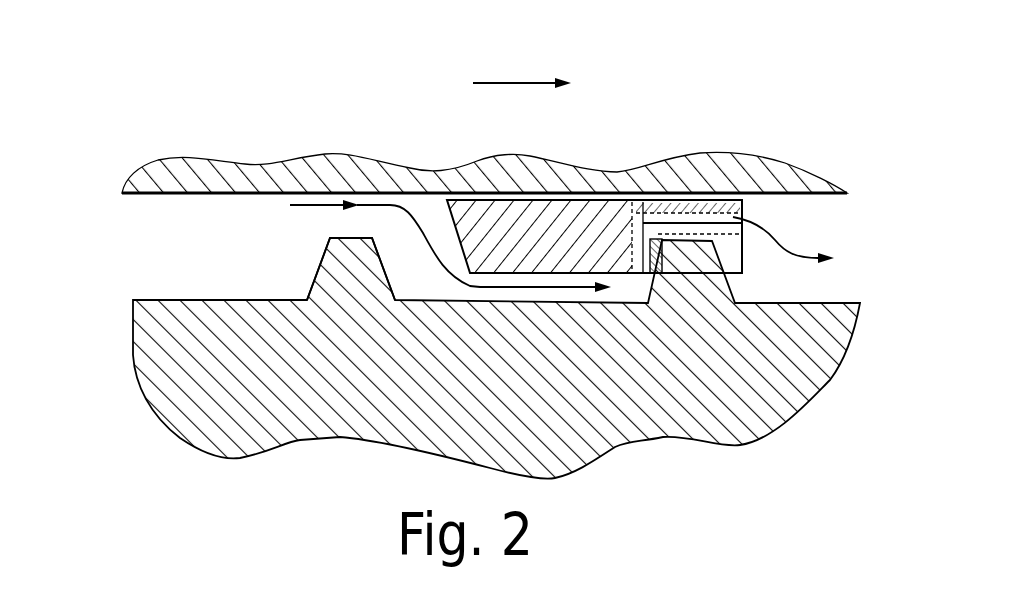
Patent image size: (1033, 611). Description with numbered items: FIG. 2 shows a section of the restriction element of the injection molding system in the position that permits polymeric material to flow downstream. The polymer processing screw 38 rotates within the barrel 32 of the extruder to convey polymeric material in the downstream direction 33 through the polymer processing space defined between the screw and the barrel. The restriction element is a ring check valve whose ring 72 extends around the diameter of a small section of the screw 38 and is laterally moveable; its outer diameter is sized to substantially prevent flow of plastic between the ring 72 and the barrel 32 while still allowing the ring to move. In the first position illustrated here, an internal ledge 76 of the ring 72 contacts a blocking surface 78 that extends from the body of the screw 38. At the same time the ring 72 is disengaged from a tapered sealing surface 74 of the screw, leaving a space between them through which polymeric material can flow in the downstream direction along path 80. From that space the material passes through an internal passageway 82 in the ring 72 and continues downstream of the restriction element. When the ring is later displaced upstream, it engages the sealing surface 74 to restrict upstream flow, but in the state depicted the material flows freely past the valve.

The barrel 32 is at (765, 180).
The downstream direction 33 is at (522, 72).
The polymer processing screw 38 is at (157, 358).
The ring 72 is at (545, 215).
The sealing surface 74 is at (392, 293).
The internal ledge 76 is at (640, 215).
The blocking surface 78 is at (657, 276).
The path 80 is at (487, 302).
The internal passageway 82 is at (788, 235).